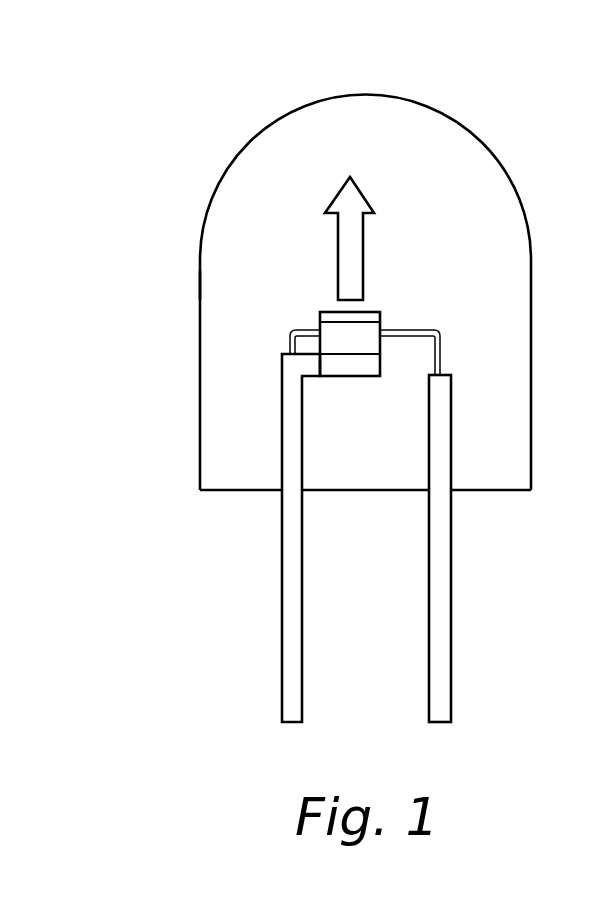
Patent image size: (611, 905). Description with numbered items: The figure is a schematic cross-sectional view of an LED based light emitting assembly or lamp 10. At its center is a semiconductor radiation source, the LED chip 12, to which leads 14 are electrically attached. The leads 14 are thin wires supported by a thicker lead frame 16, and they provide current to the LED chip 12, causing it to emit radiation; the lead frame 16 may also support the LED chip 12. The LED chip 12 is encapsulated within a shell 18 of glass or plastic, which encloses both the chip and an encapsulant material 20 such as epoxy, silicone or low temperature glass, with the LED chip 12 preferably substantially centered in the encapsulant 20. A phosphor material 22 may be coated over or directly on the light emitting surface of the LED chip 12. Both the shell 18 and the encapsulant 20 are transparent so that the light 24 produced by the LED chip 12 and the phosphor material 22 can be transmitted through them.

The light emitting assembly 10 is at (155, 98).
The LED chip 12 is at (352, 343).
The leads 14 is at (288, 342).
The lead frame 16 is at (291, 567).
The shell 18 is at (508, 181).
The encapsulant material 20 is at (222, 285).
The phosphor material 22 is at (380, 318).
The light 24 is at (337, 263).